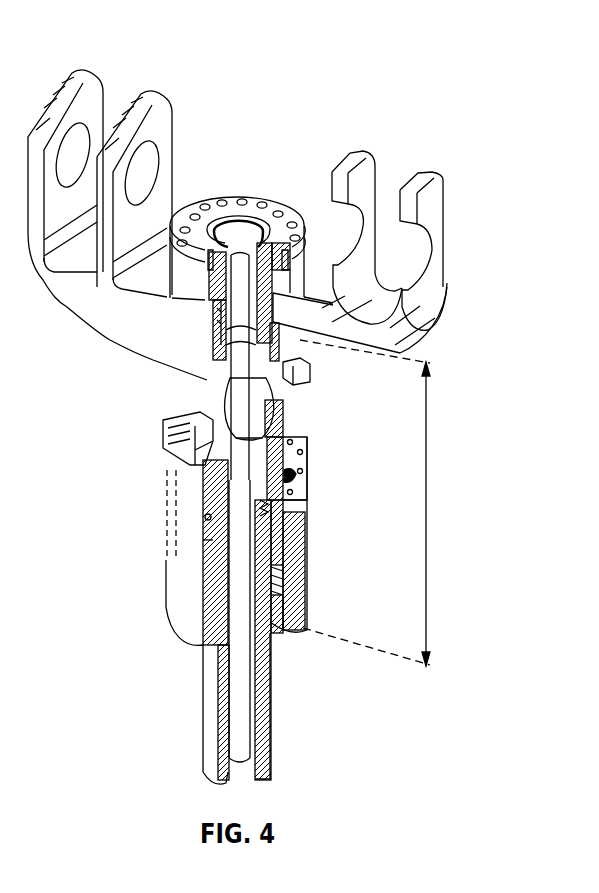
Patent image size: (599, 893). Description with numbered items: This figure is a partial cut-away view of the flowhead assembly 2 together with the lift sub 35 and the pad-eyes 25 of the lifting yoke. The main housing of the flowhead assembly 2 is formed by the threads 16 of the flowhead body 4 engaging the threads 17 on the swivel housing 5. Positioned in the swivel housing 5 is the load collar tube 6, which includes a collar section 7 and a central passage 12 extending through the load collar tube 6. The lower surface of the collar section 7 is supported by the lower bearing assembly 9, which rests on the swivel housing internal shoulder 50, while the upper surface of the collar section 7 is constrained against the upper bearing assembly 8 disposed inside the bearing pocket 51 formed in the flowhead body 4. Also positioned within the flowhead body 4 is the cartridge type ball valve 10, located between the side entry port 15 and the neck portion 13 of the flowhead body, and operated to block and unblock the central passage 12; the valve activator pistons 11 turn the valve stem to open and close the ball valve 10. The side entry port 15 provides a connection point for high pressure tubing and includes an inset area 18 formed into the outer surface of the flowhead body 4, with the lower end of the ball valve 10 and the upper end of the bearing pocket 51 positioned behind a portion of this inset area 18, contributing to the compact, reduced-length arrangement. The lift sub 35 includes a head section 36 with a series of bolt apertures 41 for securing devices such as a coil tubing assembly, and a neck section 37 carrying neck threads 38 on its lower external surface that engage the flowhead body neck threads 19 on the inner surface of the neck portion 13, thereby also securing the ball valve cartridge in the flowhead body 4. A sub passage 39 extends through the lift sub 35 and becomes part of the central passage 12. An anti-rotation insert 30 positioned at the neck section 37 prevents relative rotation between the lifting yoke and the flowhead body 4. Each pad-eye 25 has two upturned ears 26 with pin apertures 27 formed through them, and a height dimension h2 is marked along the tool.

The flowhead assembly 2 is at (352, 554).
The flowhead body 4 is at (165, 470).
The swivel housing 5 is at (183, 607).
The load collar tube 6 is at (268, 712).
The collar section 7 is at (283, 560).
The upper bearing assembly 8 is at (272, 540).
The lower bearing assembly 9 is at (284, 590).
The ball valve 10 is at (250, 432).
The valve activator pistons 11 is at (165, 442).
The central passage 12 is at (250, 746).
The neck portion 13 is at (298, 380).
The side entry port 15 is at (300, 450).
The threads 16 is at (208, 521).
The threads 17 is at (208, 553).
The inset area 18 is at (298, 478).
The flowhead body neck threads 19 is at (278, 362).
The pad-eyes 25 is at (369, 150).
The upturned ears 26 is at (80, 73).
The pin apertures 27 is at (153, 170).
The anti-rotation insert 30 is at (220, 307).
The lift sub 35 is at (257, 180).
The head section 36 is at (278, 200).
The neck section 37 is at (280, 333).
The neck threads 38 is at (257, 330).
The sub passage 39 is at (238, 283).
The bolt apertures 41 is at (218, 197).
The swivel housing internal shoulder 50 is at (302, 631).
The bearing pocket 51 is at (302, 500).
The height h2 is at (398, 503).